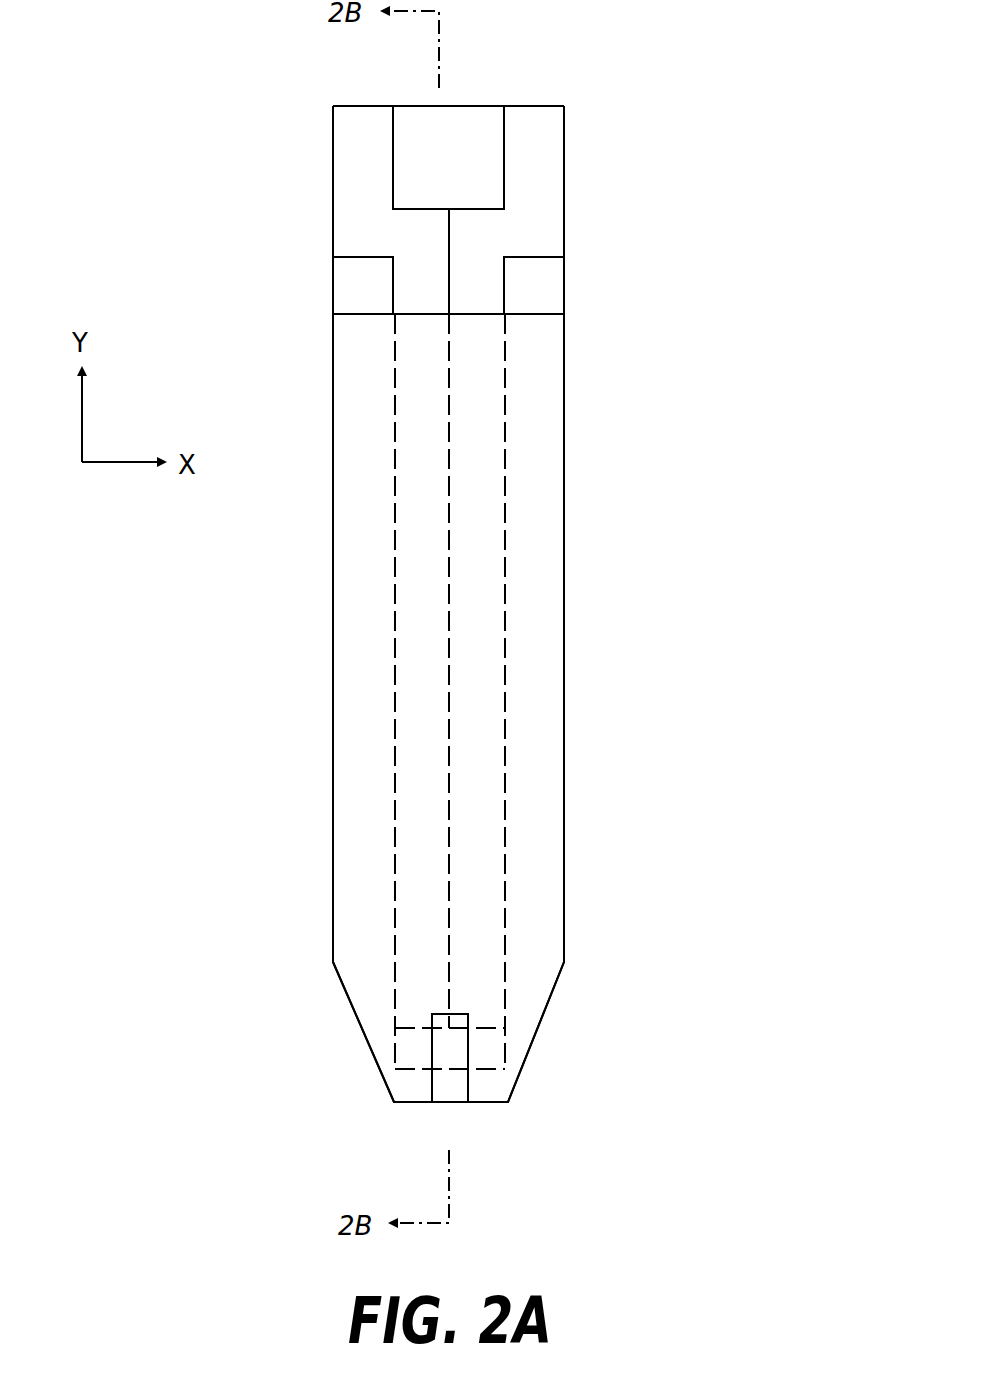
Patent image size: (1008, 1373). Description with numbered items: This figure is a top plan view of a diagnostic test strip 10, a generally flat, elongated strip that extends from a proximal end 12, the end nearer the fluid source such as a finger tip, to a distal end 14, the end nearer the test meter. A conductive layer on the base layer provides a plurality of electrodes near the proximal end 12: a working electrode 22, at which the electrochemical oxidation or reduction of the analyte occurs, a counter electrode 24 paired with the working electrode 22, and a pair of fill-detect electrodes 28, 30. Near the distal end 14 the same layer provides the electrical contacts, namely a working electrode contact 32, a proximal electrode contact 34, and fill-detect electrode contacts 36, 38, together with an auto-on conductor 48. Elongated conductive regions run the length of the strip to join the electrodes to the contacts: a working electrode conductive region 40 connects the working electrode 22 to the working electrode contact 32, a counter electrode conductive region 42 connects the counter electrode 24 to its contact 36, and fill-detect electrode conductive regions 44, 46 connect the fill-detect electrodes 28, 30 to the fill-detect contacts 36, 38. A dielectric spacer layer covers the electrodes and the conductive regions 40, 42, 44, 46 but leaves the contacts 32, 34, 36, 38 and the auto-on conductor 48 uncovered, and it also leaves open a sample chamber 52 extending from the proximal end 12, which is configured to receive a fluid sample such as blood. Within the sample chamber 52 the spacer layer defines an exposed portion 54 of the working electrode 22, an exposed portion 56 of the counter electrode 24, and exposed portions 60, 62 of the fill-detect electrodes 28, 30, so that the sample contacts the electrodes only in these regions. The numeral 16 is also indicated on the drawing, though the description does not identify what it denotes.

The test strip 10 is at (782, 158).
The proximal end 12 is at (624, 1134).
The distal end 14 is at (690, 68).
The shank portion 16 is at (278, 1054).
The working electrode 22 is at (490, 1047).
The counter electrode 24 is at (408, 1086).
The fill-detect electrode 28 is at (475, 980).
The fill-detect electrode 30 is at (408, 980).
The working electrode contact 32 is at (540, 290).
The proximal electrode contact 34 is at (355, 302).
The fill-detect electrode contact 36 is at (533, 192).
The fill-detect electrode contact 38 is at (357, 186).
The working electrode conductive region 40 is at (525, 535).
The counter electrode conductive region 42 is at (355, 565).
The fill-detect electrode conductive region 44 is at (490, 613).
The fill-detect electrode conductive region 46 is at (400, 606).
The auto-on conductor 48 is at (450, 125).
The sample chamber 52 is at (454, 1122).
The exposed portion of working electrode 54 is at (505, 1096).
The exposed portion of counter electrode 56 is at (453, 1090).
The exposed portion of fill-detect electrode 60 is at (470, 1016).
The exposed portion of fill-detect electrode 62 is at (458, 1017).